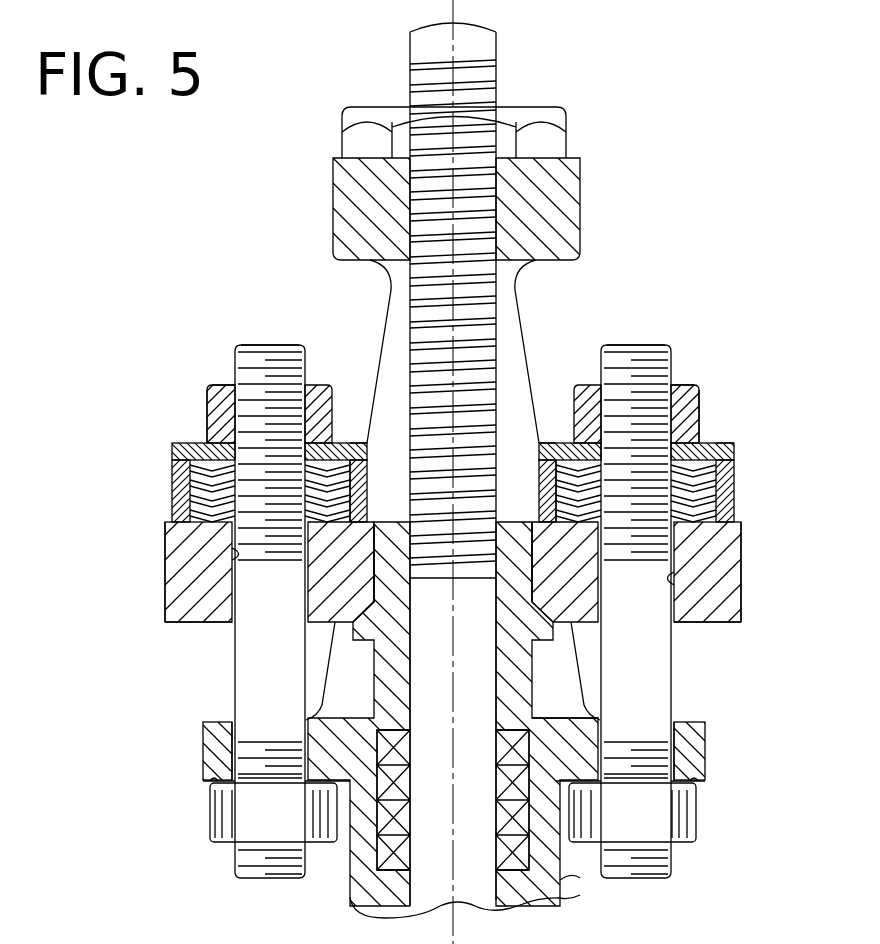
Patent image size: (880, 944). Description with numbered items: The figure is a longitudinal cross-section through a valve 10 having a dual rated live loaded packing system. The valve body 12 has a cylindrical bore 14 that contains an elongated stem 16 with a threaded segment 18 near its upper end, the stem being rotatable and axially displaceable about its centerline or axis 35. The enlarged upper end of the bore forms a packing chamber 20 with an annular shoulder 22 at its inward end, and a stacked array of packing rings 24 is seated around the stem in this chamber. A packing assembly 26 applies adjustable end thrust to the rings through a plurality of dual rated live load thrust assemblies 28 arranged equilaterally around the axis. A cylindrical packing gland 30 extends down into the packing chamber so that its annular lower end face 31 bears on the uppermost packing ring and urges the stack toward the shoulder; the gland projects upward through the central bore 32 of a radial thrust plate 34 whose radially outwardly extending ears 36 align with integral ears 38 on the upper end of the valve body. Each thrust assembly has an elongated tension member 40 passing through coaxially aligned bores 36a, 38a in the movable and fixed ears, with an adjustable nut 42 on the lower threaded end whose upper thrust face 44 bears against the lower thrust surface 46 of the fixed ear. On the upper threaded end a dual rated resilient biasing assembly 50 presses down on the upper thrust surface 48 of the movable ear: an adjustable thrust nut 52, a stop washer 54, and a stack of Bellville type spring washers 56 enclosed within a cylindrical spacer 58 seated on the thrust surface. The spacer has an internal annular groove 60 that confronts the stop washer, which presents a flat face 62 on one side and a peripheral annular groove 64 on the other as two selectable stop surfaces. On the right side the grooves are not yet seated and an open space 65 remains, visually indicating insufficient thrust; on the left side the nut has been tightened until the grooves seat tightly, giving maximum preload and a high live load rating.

The valve 10 is at (233, 262).
The valve body 12 is at (555, 878).
The cylindrical bore 14 is at (495, 885).
The elongated stem 16 is at (440, 660).
The threaded segment 18 is at (498, 313).
The packing chamber 20 is at (397, 713).
The annular shoulder 22 is at (397, 868).
The packing rings 24 is at (497, 830).
The packing assembly 26 is at (213, 637).
The dual rated live load thrust assemblies 28 is at (195, 292).
The cylindrical packing gland 30 is at (390, 662).
The annular lower end face 31 is at (540, 720).
The central bore 32 is at (382, 544).
The radial thrust plate 34 is at (160, 597).
The centerline or axis 35 is at (462, 22).
The ears or arms 36 is at (175, 535).
The bore 36a is at (233, 555).
The integral ears 38 is at (213, 753).
The bore 38a is at (233, 757).
The elongated tension member 40 is at (250, 678).
The adjustable nut 42 is at (217, 843).
The upper thrust face 44 is at (283, 782).
The lower thrust surface 46 is at (222, 777).
The upper thrust surface 48 is at (185, 490).
The dual rated resilient biasing assembly 50 is at (190, 413).
The adjustable thrust nut 52 is at (232, 440).
The stop washer 54 is at (185, 442).
The spring washers 56 is at (347, 443).
The cylindrical spacer 58 is at (180, 470).
The internal annular groove 60 is at (185, 440).
The flat or planar face 62 is at (225, 387).
The annular groove 64 is at (364, 466).
The open space 65 is at (730, 423).